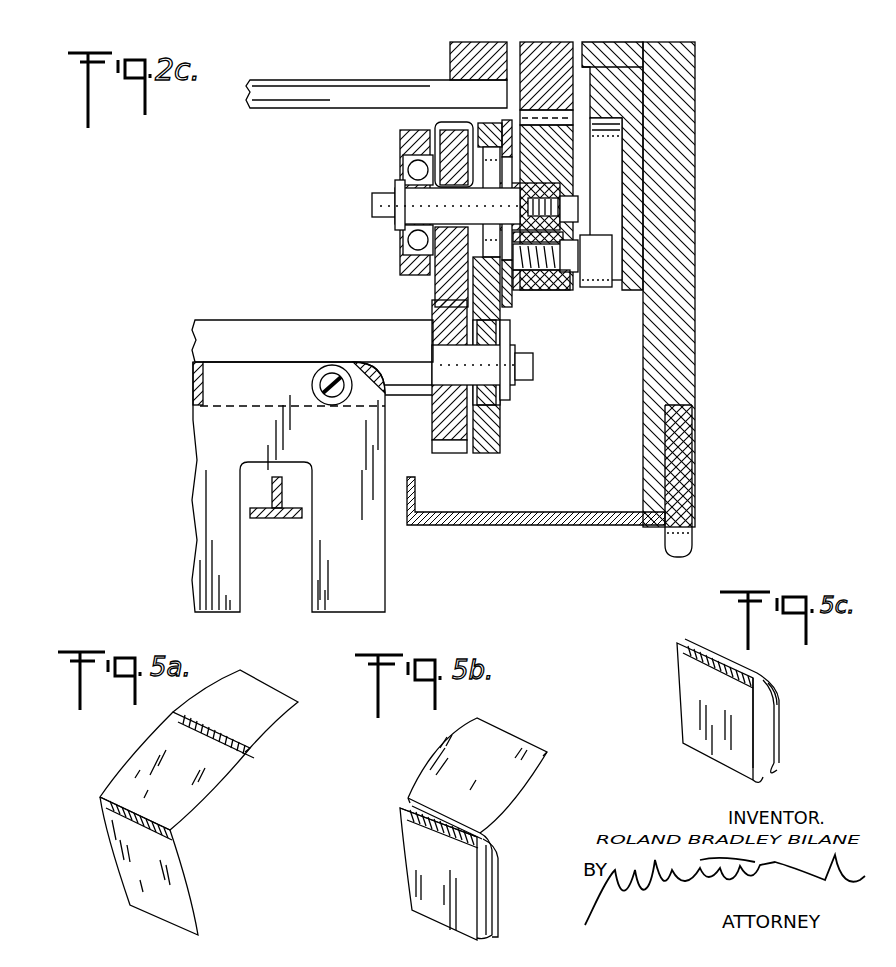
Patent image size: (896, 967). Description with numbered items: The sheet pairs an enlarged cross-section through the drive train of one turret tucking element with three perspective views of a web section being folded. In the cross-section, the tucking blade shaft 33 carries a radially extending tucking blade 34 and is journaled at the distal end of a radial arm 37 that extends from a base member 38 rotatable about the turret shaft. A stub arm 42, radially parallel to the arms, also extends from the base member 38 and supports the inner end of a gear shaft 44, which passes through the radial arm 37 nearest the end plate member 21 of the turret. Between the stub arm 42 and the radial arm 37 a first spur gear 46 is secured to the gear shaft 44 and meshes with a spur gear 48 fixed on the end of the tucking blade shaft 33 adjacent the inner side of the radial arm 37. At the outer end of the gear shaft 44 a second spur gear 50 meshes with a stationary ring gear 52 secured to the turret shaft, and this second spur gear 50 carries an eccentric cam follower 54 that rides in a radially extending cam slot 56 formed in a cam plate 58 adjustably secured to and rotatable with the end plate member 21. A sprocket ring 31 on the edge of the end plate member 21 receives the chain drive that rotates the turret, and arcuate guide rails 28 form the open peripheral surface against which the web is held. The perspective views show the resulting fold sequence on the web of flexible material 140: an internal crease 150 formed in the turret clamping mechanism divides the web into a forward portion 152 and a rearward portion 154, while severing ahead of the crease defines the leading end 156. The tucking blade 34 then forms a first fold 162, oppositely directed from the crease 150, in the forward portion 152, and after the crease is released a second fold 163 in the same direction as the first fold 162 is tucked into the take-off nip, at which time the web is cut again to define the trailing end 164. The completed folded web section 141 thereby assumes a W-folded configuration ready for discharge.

In FIG. 2C, the end plate member 21 is at (688, 280).
In FIG. 2C, the guide rails 28 is at (280, 518).
In FIG. 2C, the sprocket ring 31 is at (672, 470).
In FIG. 2C, the tucking blade shaft 33 is at (272, 322).
In FIG. 2C, the tucking blade 34 is at (373, 580).
In FIG. 2C, the radial arm 37 is at (492, 118).
In FIG. 2C, the base member 38 is at (302, 108).
In FIG. 2C, the stub arm 42 is at (407, 140).
In FIG. 2C, the gear shaft 44 is at (425, 212).
In FIG. 2C, the first spur gear 46 is at (443, 273).
In FIG. 2C, the spur gear 48 is at (440, 420).
In FIG. 2C, the second spur gear 50 is at (556, 160).
In FIG. 2C, the stationary ring gear 52 is at (560, 32).
In FIG. 2C, the eccentric cam follower 54 is at (602, 290).
In FIG. 2C, the cam slot 56 is at (610, 198).
In FIG. 2C, the cam plate 58 is at (635, 105).
In FIG. 5A, the web of flexible material 140 is at (249, 701).
In FIG. 5B, the folded web section 141 is at (504, 742).
In FIG. 5C, the folded web section 141 is at (790, 726).
In FIG. 5A, the internal crease 150 is at (252, 752).
In FIG. 5B, the internal crease 150 is at (497, 937).
In FIG. 5C, the internal crease 150 is at (763, 777).
In FIG. 5A, the forward portion 152 is at (148, 755).
In FIG. 5B, the forward portion 152 is at (483, 875).
In FIG. 5A, the rearward portion 154 is at (273, 690).
In FIG. 5B, the rearward portion 154 is at (487, 853).
In FIG. 5A, the leading end 156 is at (128, 905).
In FIG. 5B, the leading end 156 is at (413, 917).
In FIG. 5C, the leading end 156 is at (710, 762).
In FIG. 5A, the first fold 162 is at (100, 794).
In FIG. 5B, the first fold 162 is at (400, 808).
In FIG. 5C, the first fold 162 is at (677, 642).
In FIG. 5B, the second fold 163 is at (408, 798).
In FIG. 5C, the second fold 163 is at (702, 630).
In FIG. 5B, the trailing end 164 is at (538, 756).
In FIG. 5C, the trailing end 164 is at (777, 770).